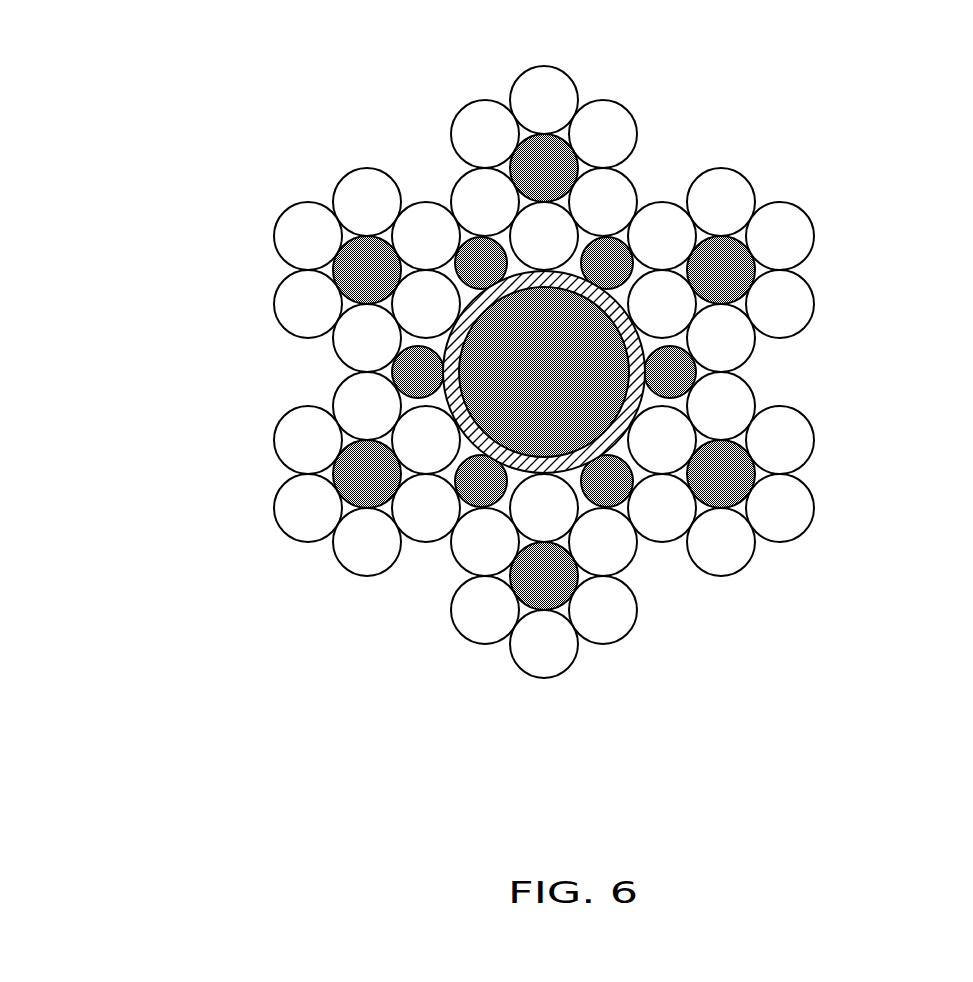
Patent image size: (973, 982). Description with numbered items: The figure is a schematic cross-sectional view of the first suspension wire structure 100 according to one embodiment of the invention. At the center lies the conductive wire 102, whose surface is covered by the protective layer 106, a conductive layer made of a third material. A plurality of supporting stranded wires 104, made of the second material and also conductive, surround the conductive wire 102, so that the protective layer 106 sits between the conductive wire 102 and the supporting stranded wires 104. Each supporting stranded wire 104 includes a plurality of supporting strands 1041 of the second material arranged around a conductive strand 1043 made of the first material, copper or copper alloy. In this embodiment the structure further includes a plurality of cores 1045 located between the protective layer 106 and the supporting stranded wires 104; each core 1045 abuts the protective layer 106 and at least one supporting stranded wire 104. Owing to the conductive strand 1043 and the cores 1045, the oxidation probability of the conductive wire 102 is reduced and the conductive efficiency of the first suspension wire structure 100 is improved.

The first suspension wire structure 100 is at (232, 49).
The conductive wire 102 is at (643, 335).
The supporting stranded wire 104 is at (278, 279).
The supporting strand 1041 is at (312, 238).
The conductive strand 1043 is at (338, 293).
The core 1045 is at (397, 378).
The protective layer 106 is at (692, 393).